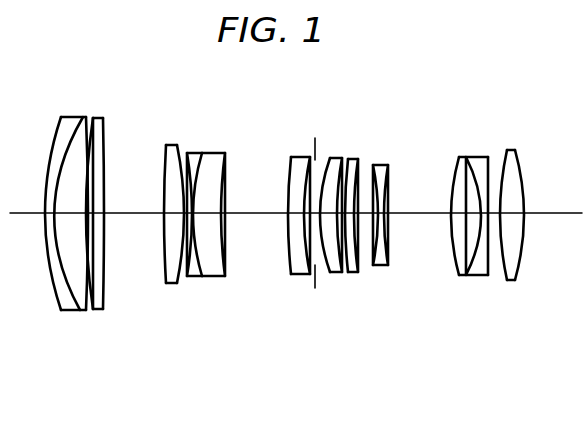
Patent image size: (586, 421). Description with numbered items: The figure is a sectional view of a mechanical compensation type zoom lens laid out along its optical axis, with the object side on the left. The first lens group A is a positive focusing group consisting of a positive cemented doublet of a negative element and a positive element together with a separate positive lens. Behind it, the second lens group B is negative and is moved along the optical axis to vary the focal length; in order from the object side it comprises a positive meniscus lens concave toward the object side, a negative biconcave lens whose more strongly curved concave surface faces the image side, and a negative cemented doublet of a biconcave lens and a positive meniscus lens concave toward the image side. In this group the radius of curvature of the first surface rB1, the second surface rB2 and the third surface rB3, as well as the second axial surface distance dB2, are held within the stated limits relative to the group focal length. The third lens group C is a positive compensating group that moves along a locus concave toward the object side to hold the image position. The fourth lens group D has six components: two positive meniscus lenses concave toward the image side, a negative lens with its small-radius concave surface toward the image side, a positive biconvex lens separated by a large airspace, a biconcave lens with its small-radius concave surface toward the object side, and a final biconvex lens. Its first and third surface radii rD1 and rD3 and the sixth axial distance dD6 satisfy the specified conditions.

The first lens group A is at (53, 334).
The second lens group B is at (187, 244).
The third lens group C is at (285, 334).
The fourth lens group D is at (420, 250).
The radius of curvature of first lens surface in the second lens group rB1 is at (166, 268).
The radius of curvature of second lens surface in the second lens group rB2 is at (178, 272).
The radius of curvature of third lens surface in the second lens group rB3 is at (192, 276).
The second distance between lens surfaces in the second lens group dB2 is at (217, 216).
The radius of curvature of first lens surface in the fourth lens group rD1 is at (331, 274).
The radius of curvature of third lens surface in the fourth lens group rD3 is at (348, 274).
The sixth distance between lens surfaces in the fourth lens group dD6 is at (415, 213).